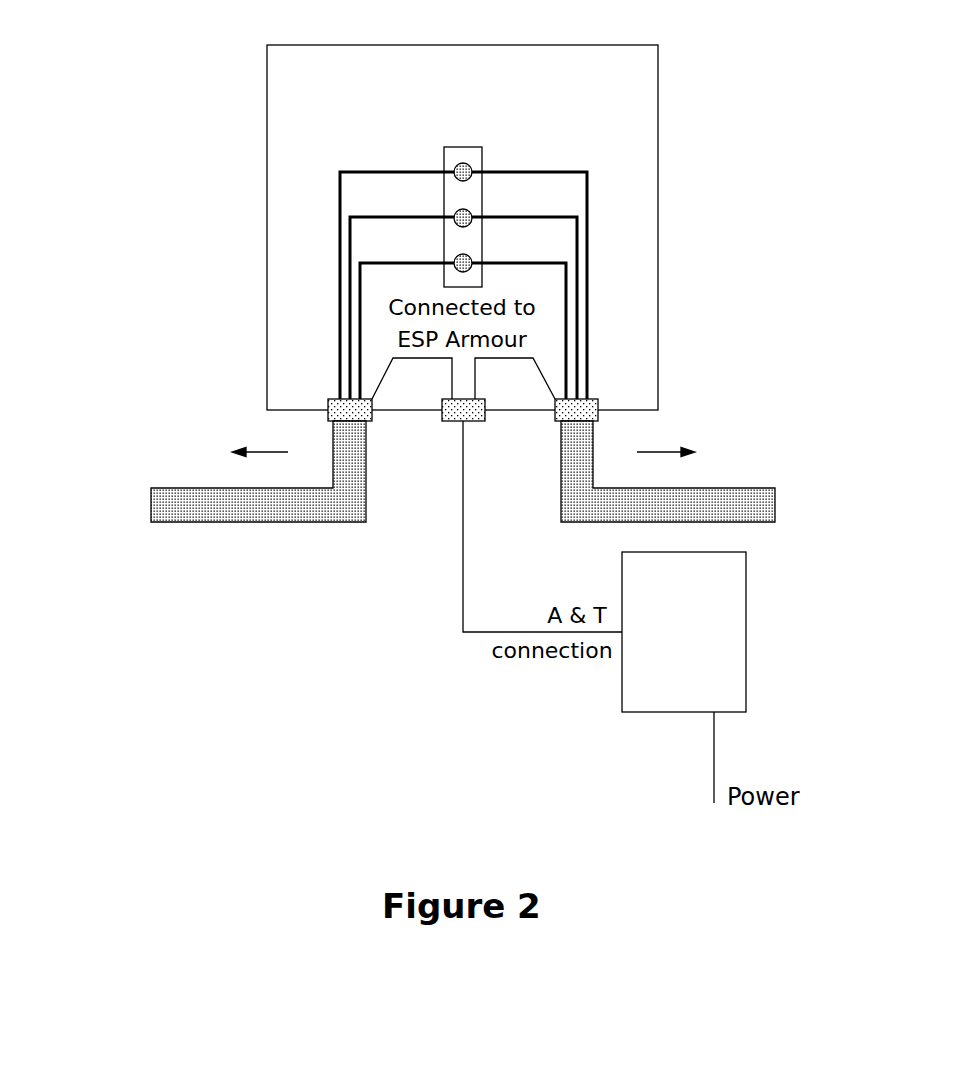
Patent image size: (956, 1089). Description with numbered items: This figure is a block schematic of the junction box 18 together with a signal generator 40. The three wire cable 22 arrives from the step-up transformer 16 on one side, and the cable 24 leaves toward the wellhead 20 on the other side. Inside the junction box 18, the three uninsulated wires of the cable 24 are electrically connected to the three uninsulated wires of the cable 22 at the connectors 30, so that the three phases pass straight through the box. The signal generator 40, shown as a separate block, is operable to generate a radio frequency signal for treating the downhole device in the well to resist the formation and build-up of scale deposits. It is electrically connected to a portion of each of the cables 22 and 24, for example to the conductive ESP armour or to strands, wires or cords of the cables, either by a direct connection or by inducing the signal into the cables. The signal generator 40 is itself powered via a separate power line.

The step-up transformer 16 is at (162, 452).
The electrical junction box 18 is at (292, 225).
The wellhead 20 is at (715, 453).
The three wire cable 22 is at (288, 522).
The cable 24 is at (757, 522).
The connectors 30 is at (460, 163).
The signal generator 40 is at (645, 702).